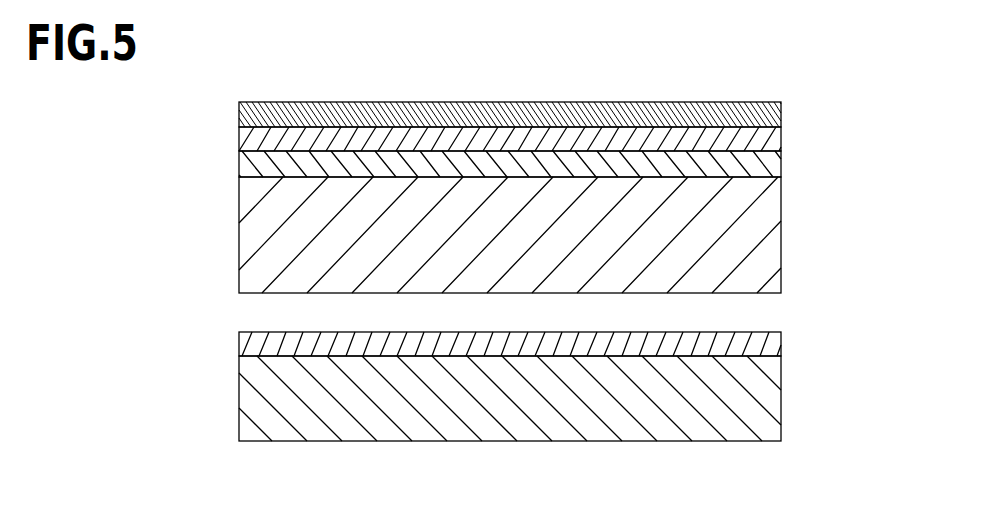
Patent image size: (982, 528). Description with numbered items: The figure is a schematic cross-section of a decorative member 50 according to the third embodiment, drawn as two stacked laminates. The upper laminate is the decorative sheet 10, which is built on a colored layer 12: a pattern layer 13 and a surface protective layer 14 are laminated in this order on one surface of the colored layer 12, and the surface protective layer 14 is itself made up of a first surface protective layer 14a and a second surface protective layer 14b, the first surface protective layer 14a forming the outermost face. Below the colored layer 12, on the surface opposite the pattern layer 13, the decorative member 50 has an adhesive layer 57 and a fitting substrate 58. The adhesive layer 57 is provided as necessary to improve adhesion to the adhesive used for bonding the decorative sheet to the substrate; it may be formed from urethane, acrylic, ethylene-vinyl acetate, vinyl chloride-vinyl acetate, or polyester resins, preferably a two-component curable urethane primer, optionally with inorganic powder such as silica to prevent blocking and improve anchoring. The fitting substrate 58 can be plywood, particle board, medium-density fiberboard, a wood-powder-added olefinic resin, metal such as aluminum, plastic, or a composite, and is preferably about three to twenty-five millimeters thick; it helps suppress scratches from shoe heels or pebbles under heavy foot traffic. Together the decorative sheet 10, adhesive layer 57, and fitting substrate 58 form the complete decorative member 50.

The decorative member 50 is at (184, 99).
The decorative sheet 10 is at (229, 101).
The surface protective layer 14 is at (855, 86).
The first surface protective layer 14a is at (783, 109).
The second surface protective layer 14b is at (783, 131).
The pattern layer 13 is at (783, 156).
The colored layer 12 is at (765, 227).
The adhesive layer 57 is at (770, 341).
The fitting substrate 58 is at (765, 396).